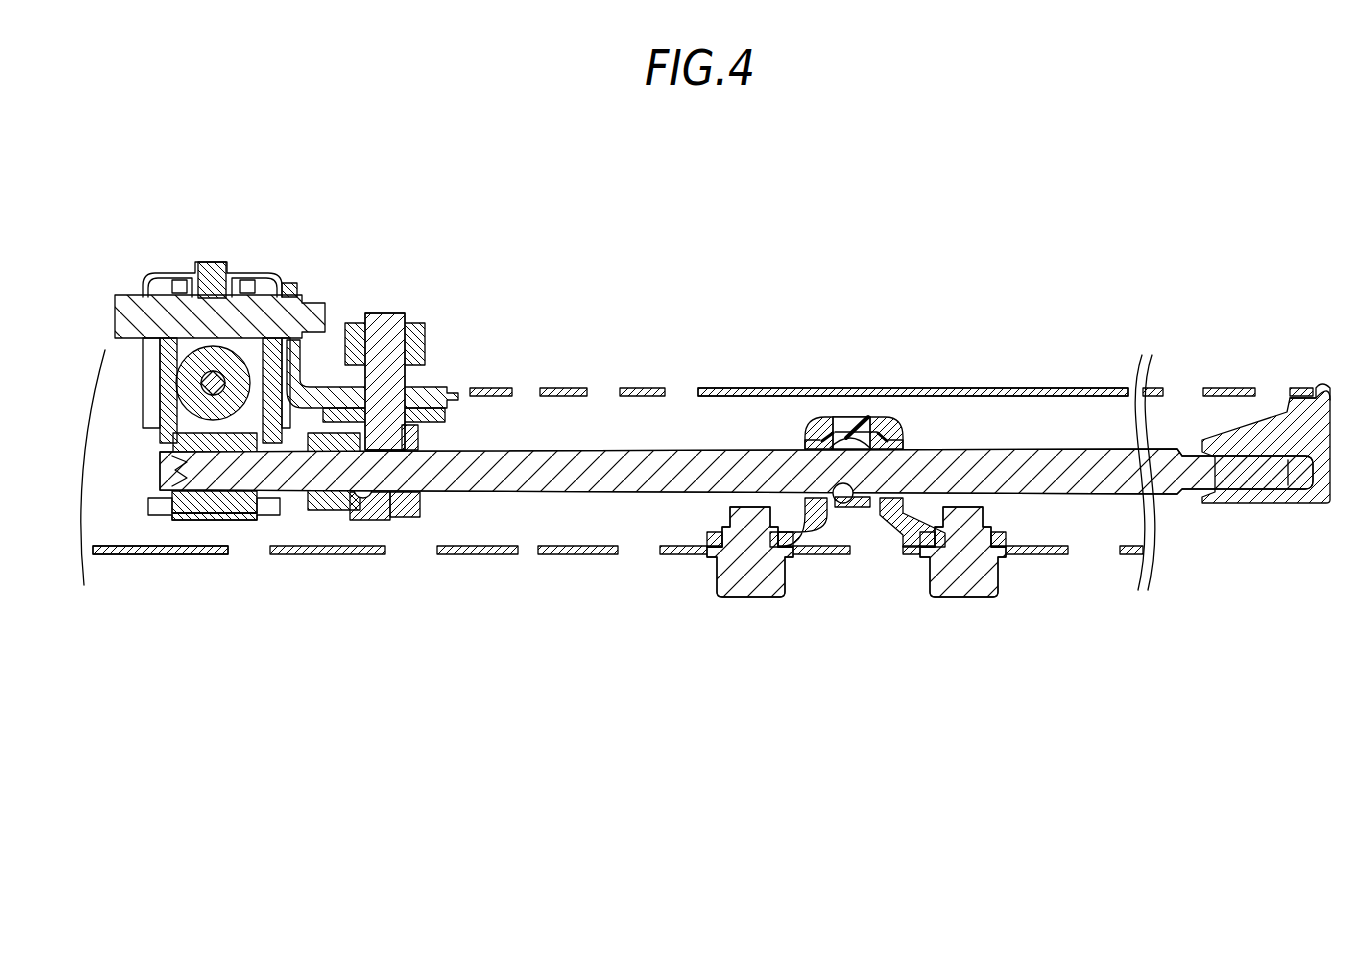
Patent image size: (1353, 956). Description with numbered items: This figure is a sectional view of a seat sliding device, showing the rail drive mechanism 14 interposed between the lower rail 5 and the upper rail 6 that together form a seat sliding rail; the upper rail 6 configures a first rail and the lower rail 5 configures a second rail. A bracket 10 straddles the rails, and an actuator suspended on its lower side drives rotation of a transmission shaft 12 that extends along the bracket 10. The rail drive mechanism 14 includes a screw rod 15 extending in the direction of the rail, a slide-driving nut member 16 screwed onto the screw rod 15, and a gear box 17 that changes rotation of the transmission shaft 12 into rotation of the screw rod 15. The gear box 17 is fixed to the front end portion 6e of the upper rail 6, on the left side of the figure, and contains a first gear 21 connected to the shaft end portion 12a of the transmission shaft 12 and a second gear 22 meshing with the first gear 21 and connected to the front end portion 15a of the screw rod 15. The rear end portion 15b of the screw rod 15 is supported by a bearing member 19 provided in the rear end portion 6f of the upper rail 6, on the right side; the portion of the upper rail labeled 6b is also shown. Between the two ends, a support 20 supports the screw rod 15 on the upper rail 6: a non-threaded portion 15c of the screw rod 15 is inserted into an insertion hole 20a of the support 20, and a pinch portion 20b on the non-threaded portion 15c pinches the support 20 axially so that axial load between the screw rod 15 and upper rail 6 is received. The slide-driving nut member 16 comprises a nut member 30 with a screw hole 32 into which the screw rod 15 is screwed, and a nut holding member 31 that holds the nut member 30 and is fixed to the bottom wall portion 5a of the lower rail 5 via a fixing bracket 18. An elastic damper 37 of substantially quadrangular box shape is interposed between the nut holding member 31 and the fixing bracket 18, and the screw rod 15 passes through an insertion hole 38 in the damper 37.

The lower rail 5 is at (174, 555).
The bottom wall portion 5a is at (165, 576).
The upper rail 6 is at (983, 387).
The upper frame plate portion 6b is at (913, 367).
The front end portion 6e is at (324, 387).
The rear end portion 6f is at (1305, 388).
The bracket 10 is at (162, 275).
The transmission shaft 12 is at (178, 383).
The shaft end portion 12a is at (155, 396).
The rail drive mechanism 14 is at (1073, 612).
The screw rod 15 is at (556, 493).
The front end portion 15a is at (182, 470).
The rear end portion 15b is at (1278, 470).
The non-threaded portion 15c is at (396, 517).
The slide-driving nut member 16 is at (872, 513).
The gear box 17 is at (264, 275).
The fixing bracket 18 is at (897, 548).
The bearing member 19 is at (1252, 505).
The support 20 is at (467, 279).
The insertion hole 20a is at (358, 520).
The pinch portion 20b is at (320, 512).
The first gear 21 is at (175, 432).
The second gear 22 is at (178, 498).
The nut member 30 is at (866, 417).
The nut holding member 31 is at (836, 425).
The screw hole 32 is at (833, 501).
The damper 37 is at (852, 418).
The insertion hole 38 is at (820, 451).